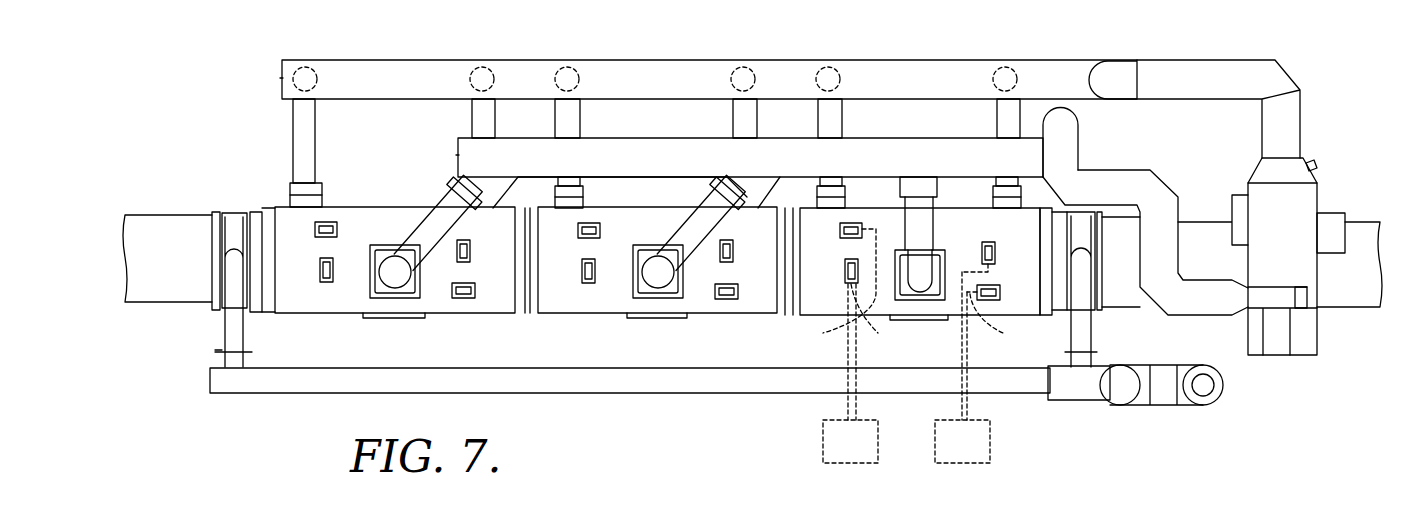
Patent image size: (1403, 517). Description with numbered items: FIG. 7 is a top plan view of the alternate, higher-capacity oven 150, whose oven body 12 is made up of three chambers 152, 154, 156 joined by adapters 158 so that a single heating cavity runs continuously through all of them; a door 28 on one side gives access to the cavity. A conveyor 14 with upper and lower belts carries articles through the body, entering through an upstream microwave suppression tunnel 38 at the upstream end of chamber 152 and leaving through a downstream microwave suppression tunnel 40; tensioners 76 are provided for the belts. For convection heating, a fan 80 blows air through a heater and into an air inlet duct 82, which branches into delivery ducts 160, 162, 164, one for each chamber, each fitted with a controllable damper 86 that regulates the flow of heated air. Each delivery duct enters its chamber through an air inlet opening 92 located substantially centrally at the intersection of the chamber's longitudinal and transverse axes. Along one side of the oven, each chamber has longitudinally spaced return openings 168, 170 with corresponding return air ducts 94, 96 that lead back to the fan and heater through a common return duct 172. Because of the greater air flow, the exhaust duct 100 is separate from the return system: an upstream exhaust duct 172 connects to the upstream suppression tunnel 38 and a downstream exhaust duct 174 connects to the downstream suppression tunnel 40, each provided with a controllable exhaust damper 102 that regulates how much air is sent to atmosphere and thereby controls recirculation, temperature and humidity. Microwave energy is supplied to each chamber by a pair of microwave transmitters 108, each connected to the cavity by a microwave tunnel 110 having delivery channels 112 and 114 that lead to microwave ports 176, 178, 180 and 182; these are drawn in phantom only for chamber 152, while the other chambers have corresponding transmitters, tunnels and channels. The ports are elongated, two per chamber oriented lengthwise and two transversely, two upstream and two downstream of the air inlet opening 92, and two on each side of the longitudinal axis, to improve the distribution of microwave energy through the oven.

The oven body 12 is at (561, 326).
The conveyor 14 is at (155, 208).
The door 28 is at (372, 318).
The upstream microwave suppression tunnel 38 is at (1102, 312).
The downstream microwave suppression tunnel 40 is at (215, 312).
The tensioner 76 is at (313, 125).
The fan 80 is at (1297, 300).
The air inlet duct 82 is at (876, 148).
The damper 86 is at (455, 183).
The air inlet opening 92 is at (395, 298).
The return air duct 94 is at (478, 116).
The return air duct 96 is at (565, 118).
The exhaust duct 100 is at (655, 394).
The exhaust damper 102 is at (232, 355).
The microwave transmitter 108 is at (848, 466).
The microwave tunnel 110 is at (845, 402).
The delivery channel 112 is at (957, 240).
The delivery channel 114 is at (945, 321).
The oven 150 is at (1326, 158).
The chamber 152 is at (952, 312).
The chamber 154 is at (740, 313).
The chamber 156 is at (497, 313).
The adapter 158 is at (527, 318).
The delivery duct 160 is at (907, 218).
The delivery duct 162 is at (699, 207).
The delivery duct 164 is at (445, 206).
The return opening 168 is at (503, 203).
The return opening 170 is at (292, 197).
The common return duct 172 is at (672, 64).
The downstream exhaust duct 174 is at (248, 328).
The microwave port 176 is at (470, 285).
The microwave port 178 is at (471, 251).
The microwave port 180 is at (338, 229).
The microwave port 182 is at (320, 266).